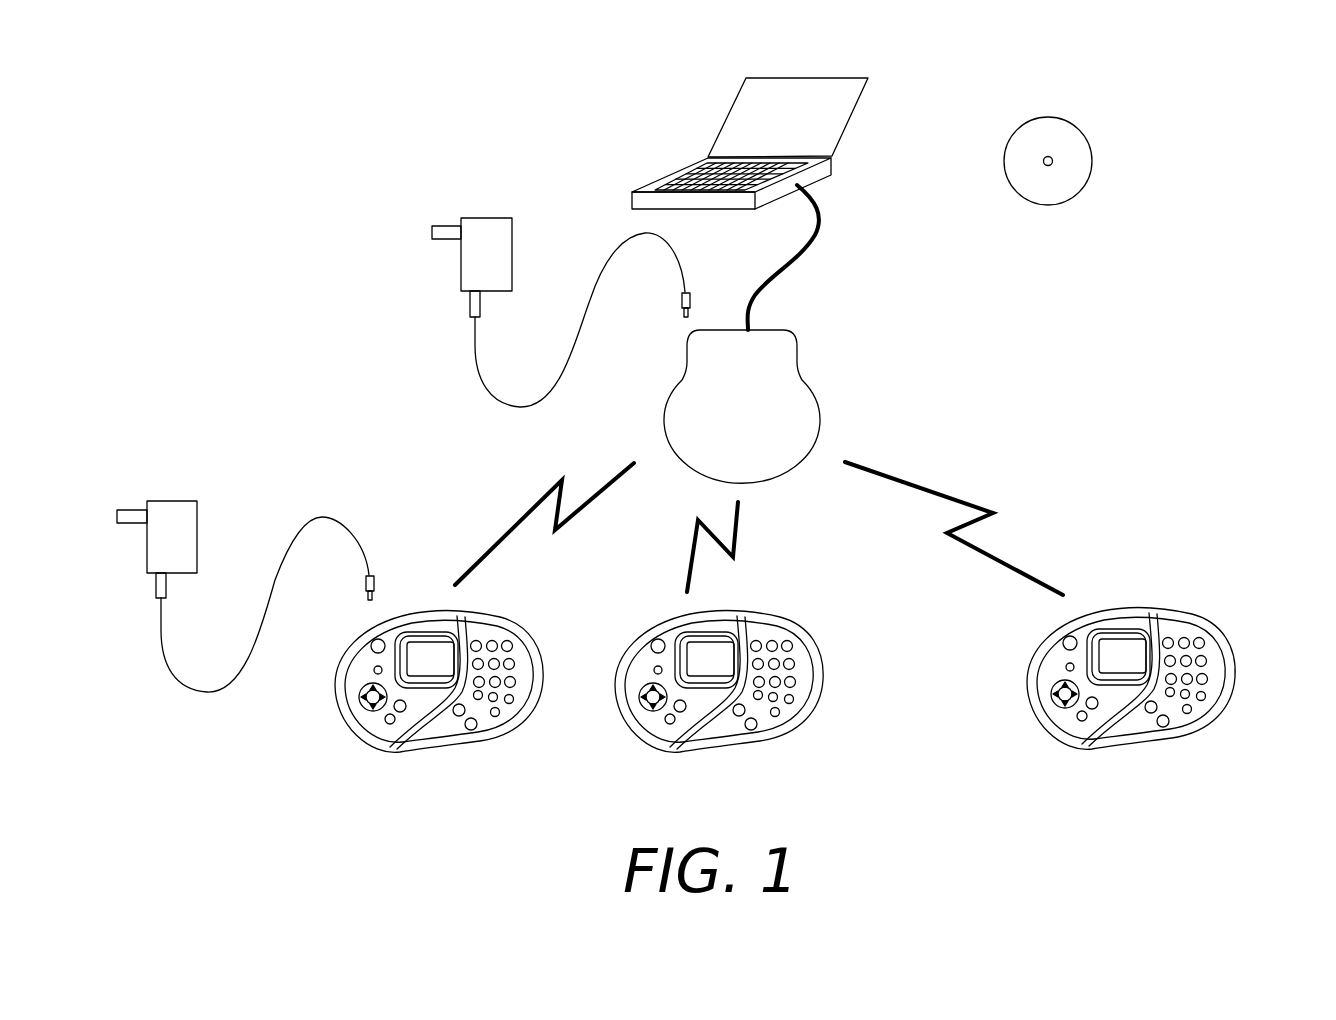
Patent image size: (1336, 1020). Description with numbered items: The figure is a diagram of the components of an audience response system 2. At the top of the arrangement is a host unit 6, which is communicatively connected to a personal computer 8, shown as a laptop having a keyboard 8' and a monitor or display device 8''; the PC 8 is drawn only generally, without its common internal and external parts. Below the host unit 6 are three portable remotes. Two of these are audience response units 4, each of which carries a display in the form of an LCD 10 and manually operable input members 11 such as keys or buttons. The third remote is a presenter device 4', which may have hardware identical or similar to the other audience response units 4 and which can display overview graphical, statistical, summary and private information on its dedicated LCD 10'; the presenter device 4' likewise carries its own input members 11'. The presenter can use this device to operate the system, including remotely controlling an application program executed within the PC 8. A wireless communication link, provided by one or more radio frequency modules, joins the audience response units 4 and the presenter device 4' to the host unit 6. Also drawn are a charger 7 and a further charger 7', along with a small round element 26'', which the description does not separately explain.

The audience response system 2 is at (240, 190).
The audience response unit 4 is at (603, 698).
The presenter device 4' is at (1161, 694).
The host unit 6 is at (777, 427).
The charger 7 is at (561, 250).
The charger 7' is at (245, 526).
The personal computer 8 is at (767, 174).
The keyboard 8' is at (692, 104).
The display device 8'' is at (806, 89).
The LCD 10 is at (607, 633).
The dedicated LCD 10' is at (1164, 630).
The input members 11 is at (671, 665).
The keypad 11' is at (1229, 663).
The disc / token 26'' is at (1112, 170).